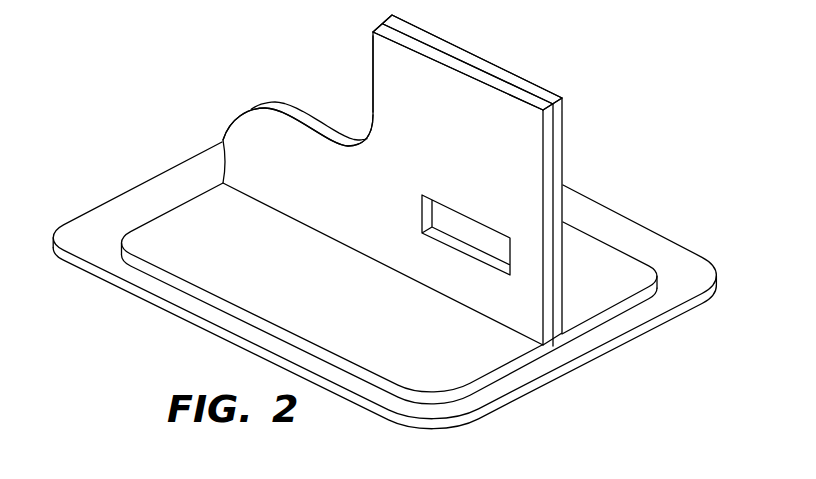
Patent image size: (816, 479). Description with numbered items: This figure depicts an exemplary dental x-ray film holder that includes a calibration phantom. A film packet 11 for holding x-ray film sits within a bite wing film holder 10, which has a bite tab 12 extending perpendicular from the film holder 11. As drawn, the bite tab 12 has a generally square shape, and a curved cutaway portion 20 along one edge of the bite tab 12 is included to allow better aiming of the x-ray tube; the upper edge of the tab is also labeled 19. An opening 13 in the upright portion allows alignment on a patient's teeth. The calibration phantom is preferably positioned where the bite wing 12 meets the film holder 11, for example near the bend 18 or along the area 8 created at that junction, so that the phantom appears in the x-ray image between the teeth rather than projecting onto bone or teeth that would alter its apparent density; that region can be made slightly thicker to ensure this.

The bite wing film holder 10 is at (384, 222).
The film packet 11 is at (658, 297).
The area 8 is at (560, 337).
The bend 18 is at (513, 313).
The bite tab 12 is at (398, 78).
The top edge of plate 19 is at (372, 45).
The curved cutaway portion 20 is at (360, 138).
The opening 13 is at (480, 242).